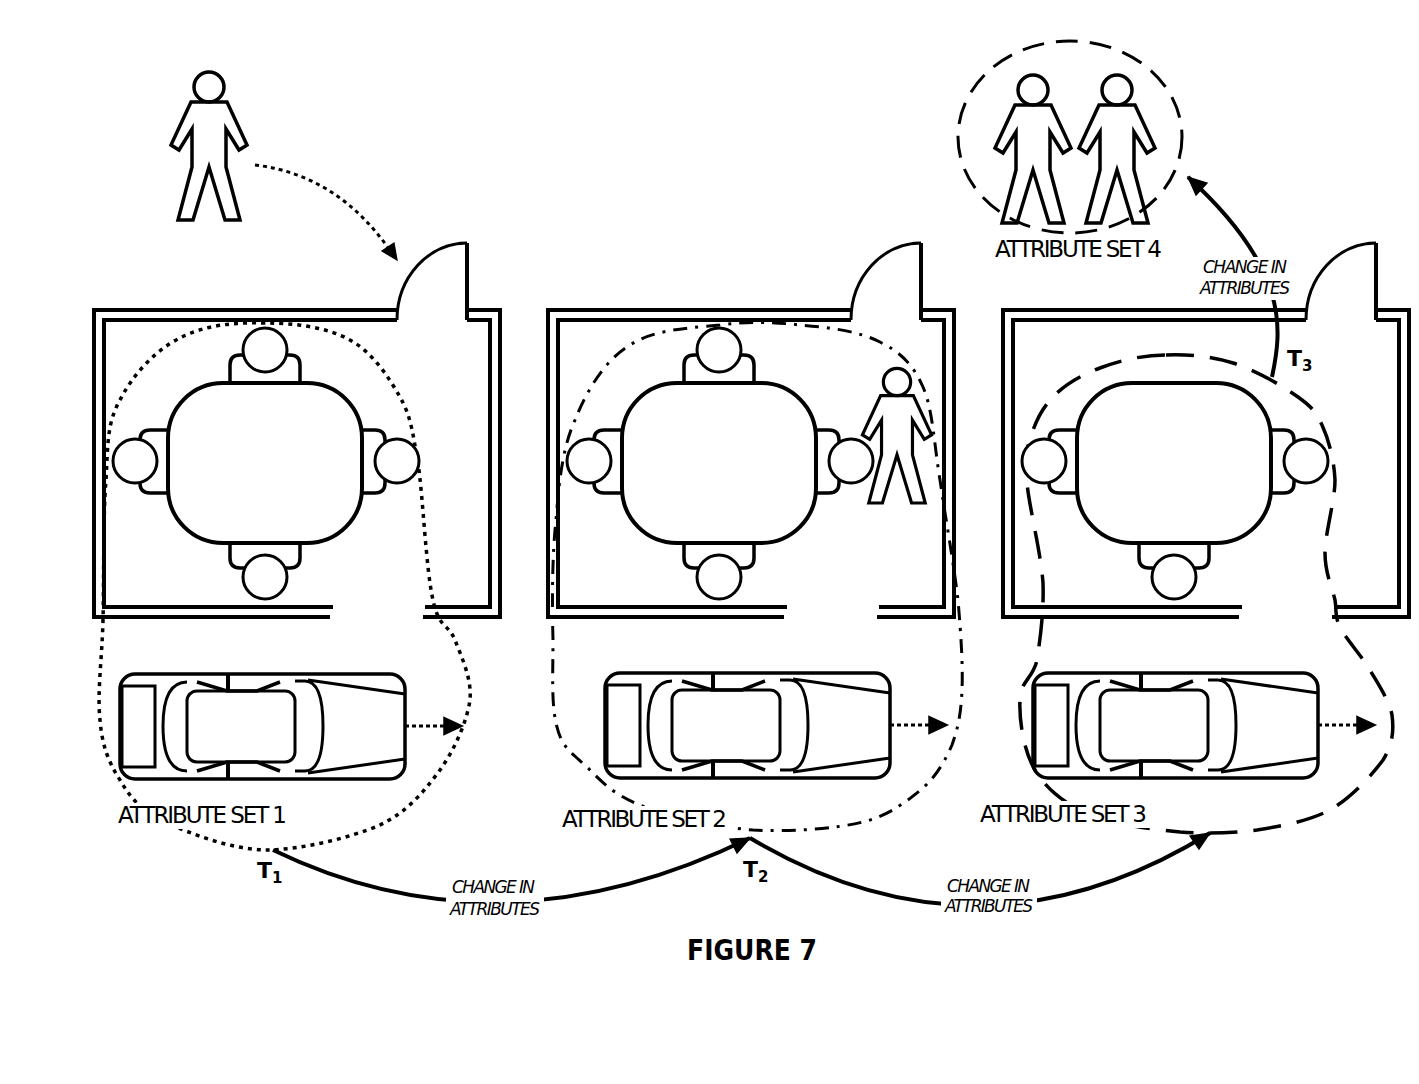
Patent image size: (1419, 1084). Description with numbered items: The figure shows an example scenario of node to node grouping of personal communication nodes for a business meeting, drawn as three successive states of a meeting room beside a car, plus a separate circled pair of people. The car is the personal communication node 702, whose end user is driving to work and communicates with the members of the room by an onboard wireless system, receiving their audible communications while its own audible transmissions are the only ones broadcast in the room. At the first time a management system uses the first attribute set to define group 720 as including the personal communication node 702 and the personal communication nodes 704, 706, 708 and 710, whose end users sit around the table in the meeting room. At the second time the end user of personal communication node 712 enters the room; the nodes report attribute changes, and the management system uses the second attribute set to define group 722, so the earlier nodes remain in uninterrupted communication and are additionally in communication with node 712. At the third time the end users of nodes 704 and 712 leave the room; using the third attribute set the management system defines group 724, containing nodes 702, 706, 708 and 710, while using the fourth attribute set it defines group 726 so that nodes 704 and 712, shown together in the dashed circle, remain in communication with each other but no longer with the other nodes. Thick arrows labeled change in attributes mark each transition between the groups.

The personal communication node 702 is at (746, 726).
The personal communication node 704 is at (692, 229).
The personal communication node 706 is at (595, 461).
The personal communication node 708 is at (719, 571).
The personal communication node 710 is at (845, 461).
The personal communication node 712 is at (621, 287).
The group 720 is at (395, 641).
The group 722 is at (869, 642).
The group 724 is at (1290, 642).
The group 726 is at (963, 130).